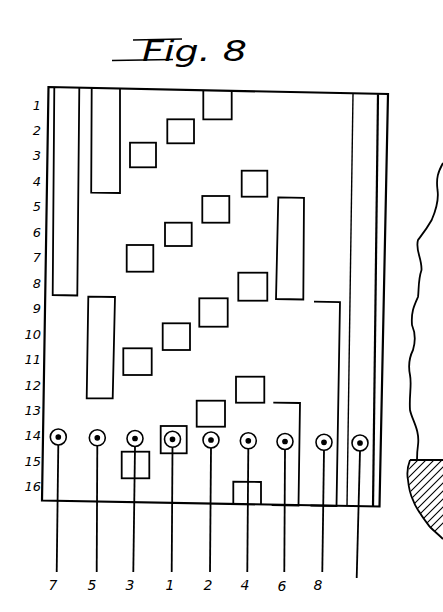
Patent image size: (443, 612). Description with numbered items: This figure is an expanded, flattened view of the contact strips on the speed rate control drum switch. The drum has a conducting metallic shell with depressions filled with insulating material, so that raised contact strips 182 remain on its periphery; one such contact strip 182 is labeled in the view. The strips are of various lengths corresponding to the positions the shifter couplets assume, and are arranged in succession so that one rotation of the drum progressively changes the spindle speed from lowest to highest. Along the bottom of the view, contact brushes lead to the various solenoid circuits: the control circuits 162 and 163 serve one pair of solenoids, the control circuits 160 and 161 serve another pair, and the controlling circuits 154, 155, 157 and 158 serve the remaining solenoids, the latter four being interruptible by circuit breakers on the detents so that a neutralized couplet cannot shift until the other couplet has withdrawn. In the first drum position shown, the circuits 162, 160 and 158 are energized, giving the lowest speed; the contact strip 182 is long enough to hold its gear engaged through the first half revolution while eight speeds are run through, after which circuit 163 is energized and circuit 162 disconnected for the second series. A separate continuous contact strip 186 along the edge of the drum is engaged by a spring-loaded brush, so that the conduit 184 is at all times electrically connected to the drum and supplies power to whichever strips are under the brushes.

The contact strip 182 is at (263, 186).
The contact strip 186 is at (382, 173).
The control circuit 162 is at (57, 539).
The control circuit 160 is at (103, 537).
The controlling circuit 154 is at (140, 537).
The controlling circuit 157 is at (178, 537).
The controlling circuit 158 is at (216, 536).
The controlling circuit 155 is at (248, 544).
The control circuit 161 is at (292, 545).
The control circuit 163 is at (329, 543).
The conduit 184 is at (357, 562).